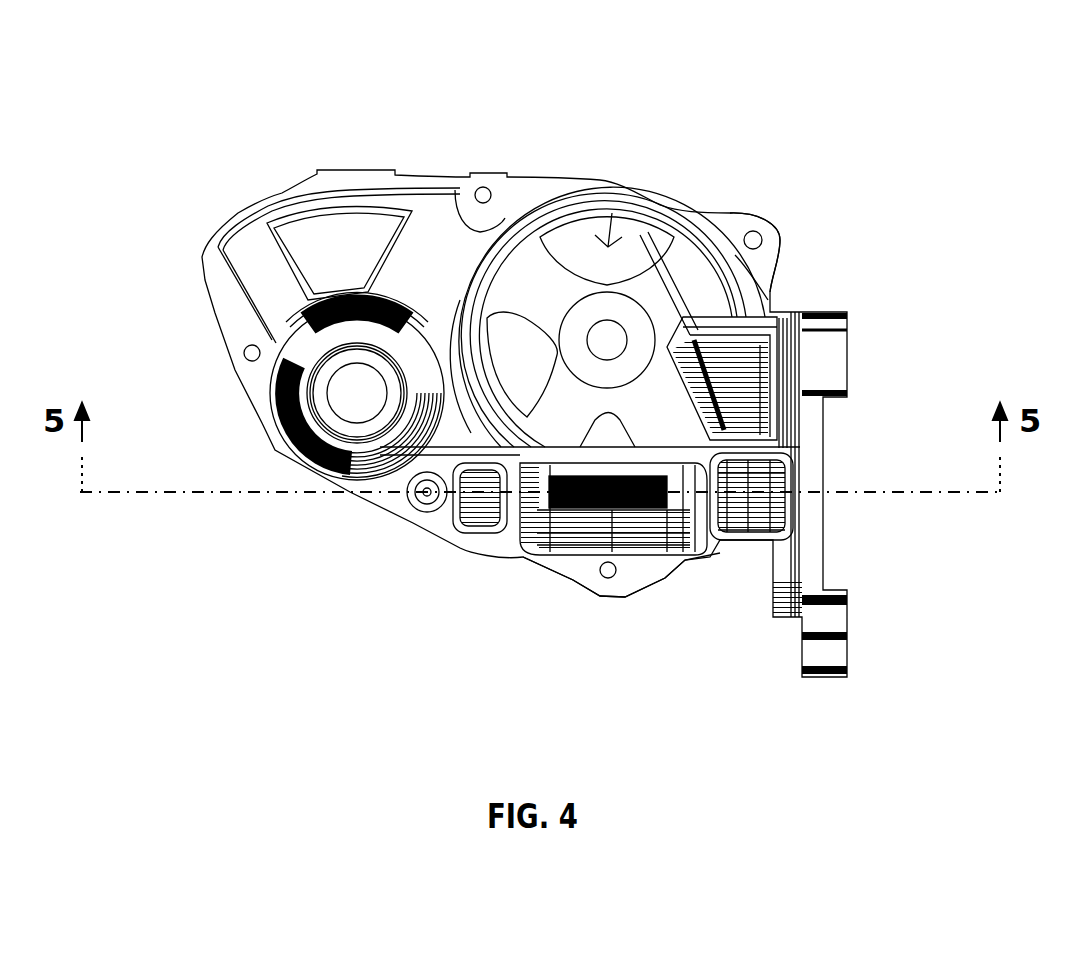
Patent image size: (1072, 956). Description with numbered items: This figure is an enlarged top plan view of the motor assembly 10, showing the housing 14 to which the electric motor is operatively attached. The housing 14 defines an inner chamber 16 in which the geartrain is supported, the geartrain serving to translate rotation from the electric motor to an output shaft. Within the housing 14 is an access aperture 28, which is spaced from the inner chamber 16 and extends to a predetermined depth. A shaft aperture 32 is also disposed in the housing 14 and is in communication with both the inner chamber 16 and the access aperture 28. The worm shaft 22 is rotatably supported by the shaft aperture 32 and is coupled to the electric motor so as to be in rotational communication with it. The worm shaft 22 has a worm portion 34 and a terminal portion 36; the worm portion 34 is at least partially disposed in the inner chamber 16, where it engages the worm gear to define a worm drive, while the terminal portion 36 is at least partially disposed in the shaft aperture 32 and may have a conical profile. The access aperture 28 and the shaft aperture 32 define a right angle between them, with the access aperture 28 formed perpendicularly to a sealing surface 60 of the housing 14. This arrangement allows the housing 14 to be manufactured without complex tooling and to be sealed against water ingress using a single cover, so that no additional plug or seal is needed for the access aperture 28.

The motor assembly 10 is at (842, 152).
The housing 14 is at (237, 210).
The inner chamber 16 is at (627, 177).
The worm shaft 22 is at (676, 560).
The access aperture 28 is at (422, 535).
The shaft aperture 32 is at (523, 548).
The worm portion 34 is at (590, 555).
The terminal portion 36 is at (548, 555).
The sealing surface 60 is at (775, 265).